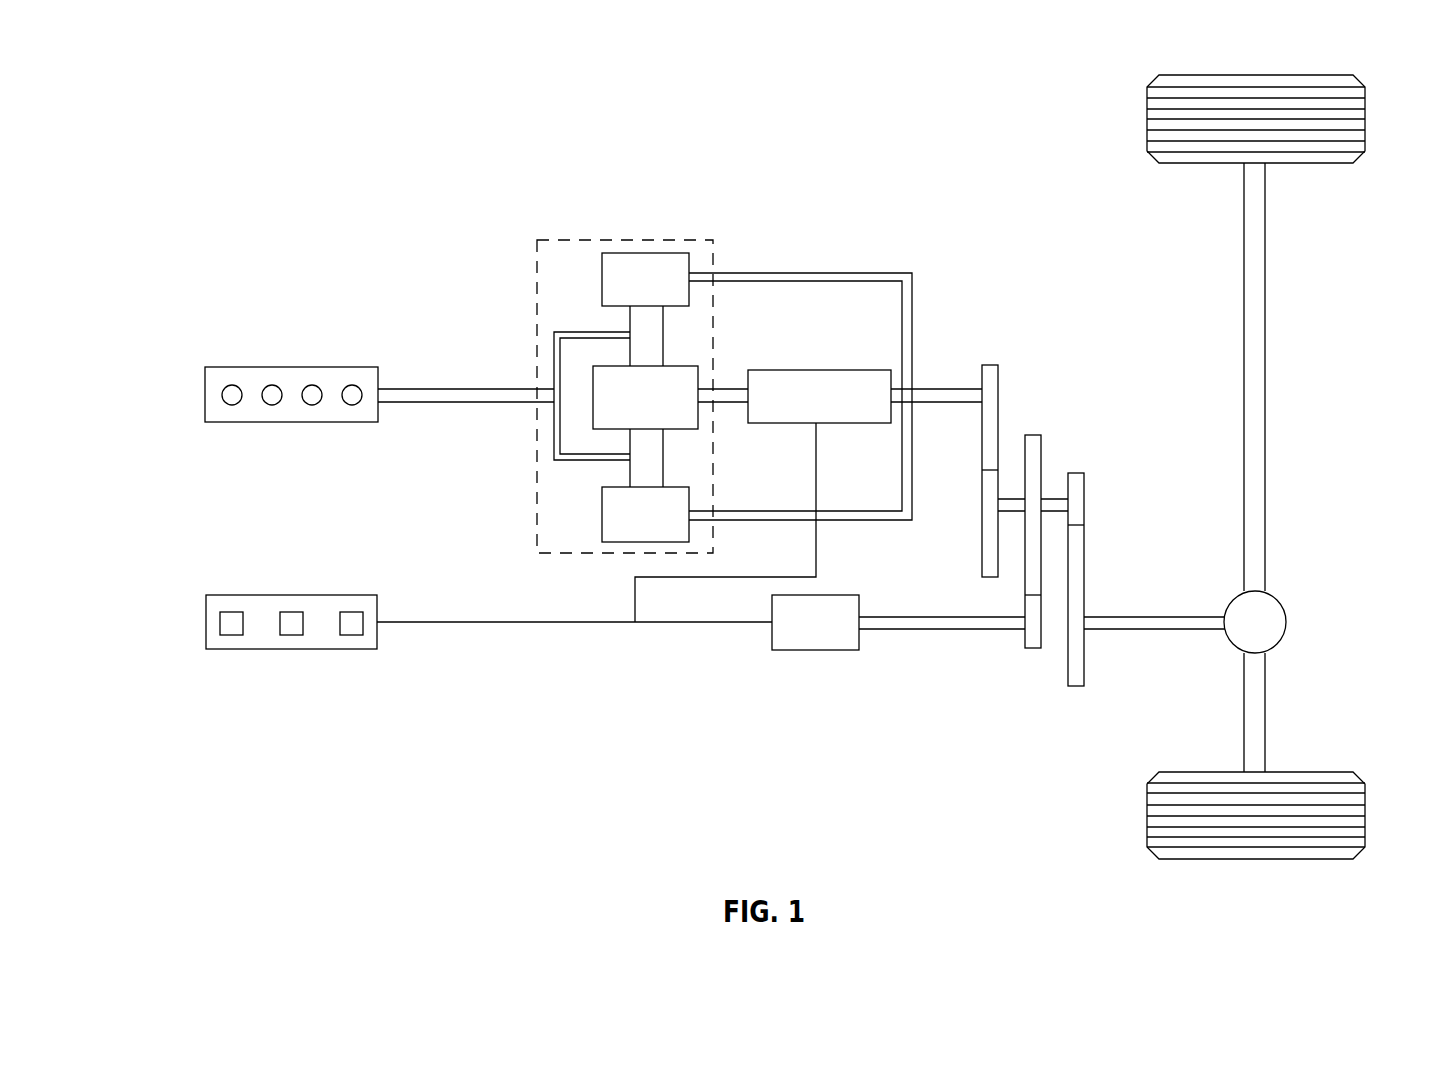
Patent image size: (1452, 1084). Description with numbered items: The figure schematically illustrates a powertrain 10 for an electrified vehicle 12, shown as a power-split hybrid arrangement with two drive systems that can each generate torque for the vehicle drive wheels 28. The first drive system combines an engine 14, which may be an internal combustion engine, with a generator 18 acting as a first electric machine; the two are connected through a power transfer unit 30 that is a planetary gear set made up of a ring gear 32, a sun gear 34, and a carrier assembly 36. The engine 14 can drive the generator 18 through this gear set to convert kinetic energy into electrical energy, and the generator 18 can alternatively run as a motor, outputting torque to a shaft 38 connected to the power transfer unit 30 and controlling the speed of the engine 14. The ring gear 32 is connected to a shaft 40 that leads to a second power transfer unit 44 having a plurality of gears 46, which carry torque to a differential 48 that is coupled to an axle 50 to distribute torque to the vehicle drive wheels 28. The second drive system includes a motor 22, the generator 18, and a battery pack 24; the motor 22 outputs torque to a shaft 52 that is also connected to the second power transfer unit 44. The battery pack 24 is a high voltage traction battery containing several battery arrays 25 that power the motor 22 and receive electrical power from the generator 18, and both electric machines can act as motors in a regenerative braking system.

The powertrain 10 is at (345, 148).
The electrified vehicle 12 is at (826, 228).
The engine 14 is at (286, 423).
The generator 18 is at (815, 370).
The motor 22 is at (813, 651).
The battery pack 24 is at (206, 612).
The battery arrays 25 is at (231, 633).
The vehicle drive wheels 28 is at (1368, 120).
The power transfer unit 30 is at (600, 238).
The ring gear 32 is at (645, 249).
The sun gear 34 is at (702, 412).
The carrier assembly 36 is at (554, 427).
The shaft 38 is at (724, 387).
The shaft 40 is at (958, 405).
The second power transfer unit 44 is at (1101, 324).
The gears 46 is at (989, 364).
The differential 48 is at (1288, 626).
The axle 50 is at (1267, 412).
The shaft 52 is at (961, 631).